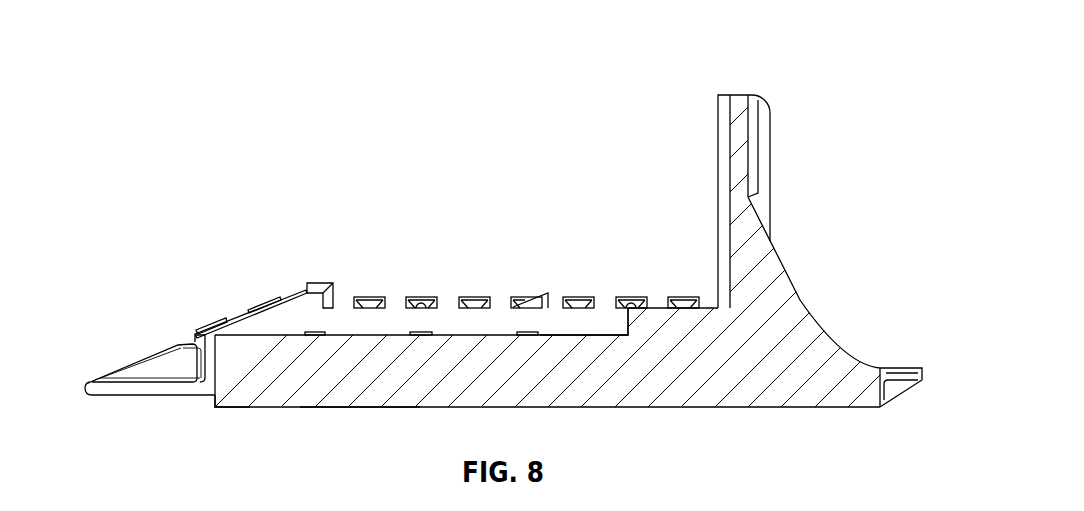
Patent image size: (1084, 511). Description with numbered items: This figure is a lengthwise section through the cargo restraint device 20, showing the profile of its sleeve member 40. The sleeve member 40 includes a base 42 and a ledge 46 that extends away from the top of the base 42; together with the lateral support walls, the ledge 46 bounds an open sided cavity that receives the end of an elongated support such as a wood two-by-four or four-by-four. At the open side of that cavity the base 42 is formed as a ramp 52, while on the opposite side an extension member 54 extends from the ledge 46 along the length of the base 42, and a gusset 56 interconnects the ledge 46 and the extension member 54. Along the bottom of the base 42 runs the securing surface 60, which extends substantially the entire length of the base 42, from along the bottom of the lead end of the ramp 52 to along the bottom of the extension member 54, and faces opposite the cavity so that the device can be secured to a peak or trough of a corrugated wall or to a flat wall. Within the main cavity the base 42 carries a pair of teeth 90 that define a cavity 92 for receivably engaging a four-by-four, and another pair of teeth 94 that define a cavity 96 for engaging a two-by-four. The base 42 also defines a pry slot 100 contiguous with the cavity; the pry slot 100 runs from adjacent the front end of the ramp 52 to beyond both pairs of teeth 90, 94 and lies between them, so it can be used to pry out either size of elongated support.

The cargo restraint device 20 is at (803, 290).
The sleeve member 40 is at (741, 90).
The base 42 is at (238, 392).
The ledge 46 is at (724, 142).
The ramp 52 is at (237, 320).
The extension member 54 is at (853, 397).
The gusset 56 is at (768, 260).
The securing surface 60 is at (357, 407).
The teeth 90 is at (317, 285).
The cavity 92 is at (345, 303).
The teeth 94 is at (543, 293).
The cavity 96 is at (605, 297).
The pry slot 100 is at (582, 327).